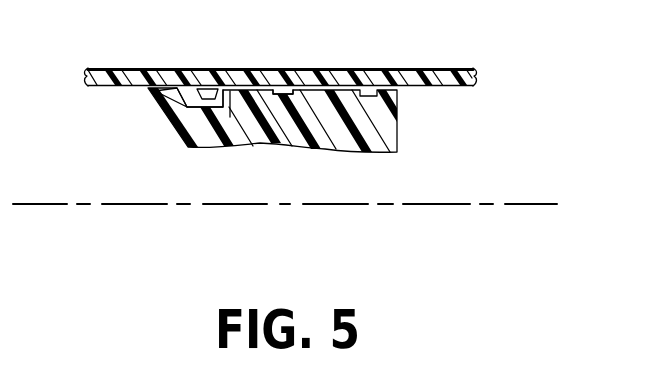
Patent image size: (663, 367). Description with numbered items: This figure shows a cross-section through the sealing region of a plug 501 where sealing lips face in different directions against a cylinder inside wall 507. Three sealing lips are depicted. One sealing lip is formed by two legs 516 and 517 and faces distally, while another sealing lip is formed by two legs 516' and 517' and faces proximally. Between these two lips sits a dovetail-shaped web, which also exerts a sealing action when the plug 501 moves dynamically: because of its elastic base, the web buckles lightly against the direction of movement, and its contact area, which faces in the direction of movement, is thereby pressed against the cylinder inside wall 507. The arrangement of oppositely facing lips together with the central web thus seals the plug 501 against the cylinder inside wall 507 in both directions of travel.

The cylinder inside wall 507 is at (112, 88).
The plug 501 is at (398, 131).
The leg 516 is at (150, 169).
The leg 516' is at (282, 182).
The leg 517 is at (185, 58).
The leg 517' is at (249, 58).